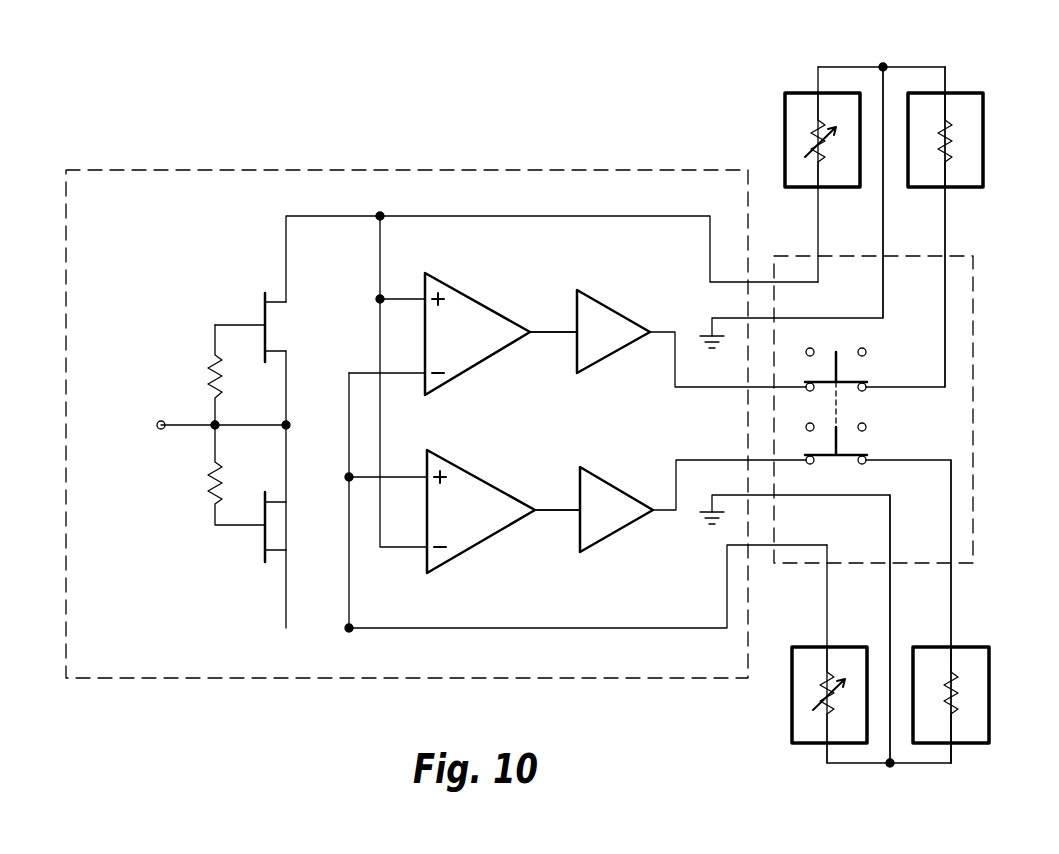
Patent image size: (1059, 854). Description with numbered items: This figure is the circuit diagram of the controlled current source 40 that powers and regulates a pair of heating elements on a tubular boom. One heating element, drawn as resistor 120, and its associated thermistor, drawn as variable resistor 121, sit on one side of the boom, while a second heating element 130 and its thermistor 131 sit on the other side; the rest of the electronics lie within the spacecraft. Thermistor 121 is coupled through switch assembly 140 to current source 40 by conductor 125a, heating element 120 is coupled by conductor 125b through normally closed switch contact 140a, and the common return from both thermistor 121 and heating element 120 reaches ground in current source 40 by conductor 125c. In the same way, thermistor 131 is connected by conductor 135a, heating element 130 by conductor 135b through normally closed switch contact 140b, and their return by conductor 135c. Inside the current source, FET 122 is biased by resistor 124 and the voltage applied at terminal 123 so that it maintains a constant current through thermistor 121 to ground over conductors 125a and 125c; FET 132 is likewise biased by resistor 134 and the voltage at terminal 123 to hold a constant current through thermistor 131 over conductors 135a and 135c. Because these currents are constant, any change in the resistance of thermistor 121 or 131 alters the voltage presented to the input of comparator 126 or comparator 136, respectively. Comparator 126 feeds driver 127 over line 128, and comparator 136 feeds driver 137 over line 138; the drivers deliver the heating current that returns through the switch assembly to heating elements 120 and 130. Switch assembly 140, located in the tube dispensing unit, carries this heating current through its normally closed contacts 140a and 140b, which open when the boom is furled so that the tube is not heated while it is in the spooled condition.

The controlled current source 40 is at (336, 171).
The heating element 120 is at (958, 93).
The thermistor 121 is at (786, 126).
The FET 122 is at (267, 332).
The terminal 123 is at (165, 420).
The resistor 124 is at (222, 393).
The conductor 125a is at (820, 245).
The conductor 125b is at (948, 245).
The conductor 125c is at (885, 245).
The comparator 126 is at (484, 308).
The driver 127 is at (614, 312).
The comparator output line 128 is at (556, 336).
The heating element 130 is at (989, 734).
The thermistor 131 is at (793, 731).
The FET 132 is at (268, 533).
The resistor 134 is at (222, 492).
The conductor 135a is at (828, 630).
The conductor 135b is at (952, 630).
The conductor 135c is at (891, 630).
The comparator 136 is at (482, 484).
The driver 137 is at (606, 488).
The comparator output line 138 is at (562, 514).
The switch assembly 140 is at (973, 372).
The normally closed switch contact 140a is at (866, 392).
The normally closed switch contact 140b is at (866, 464).